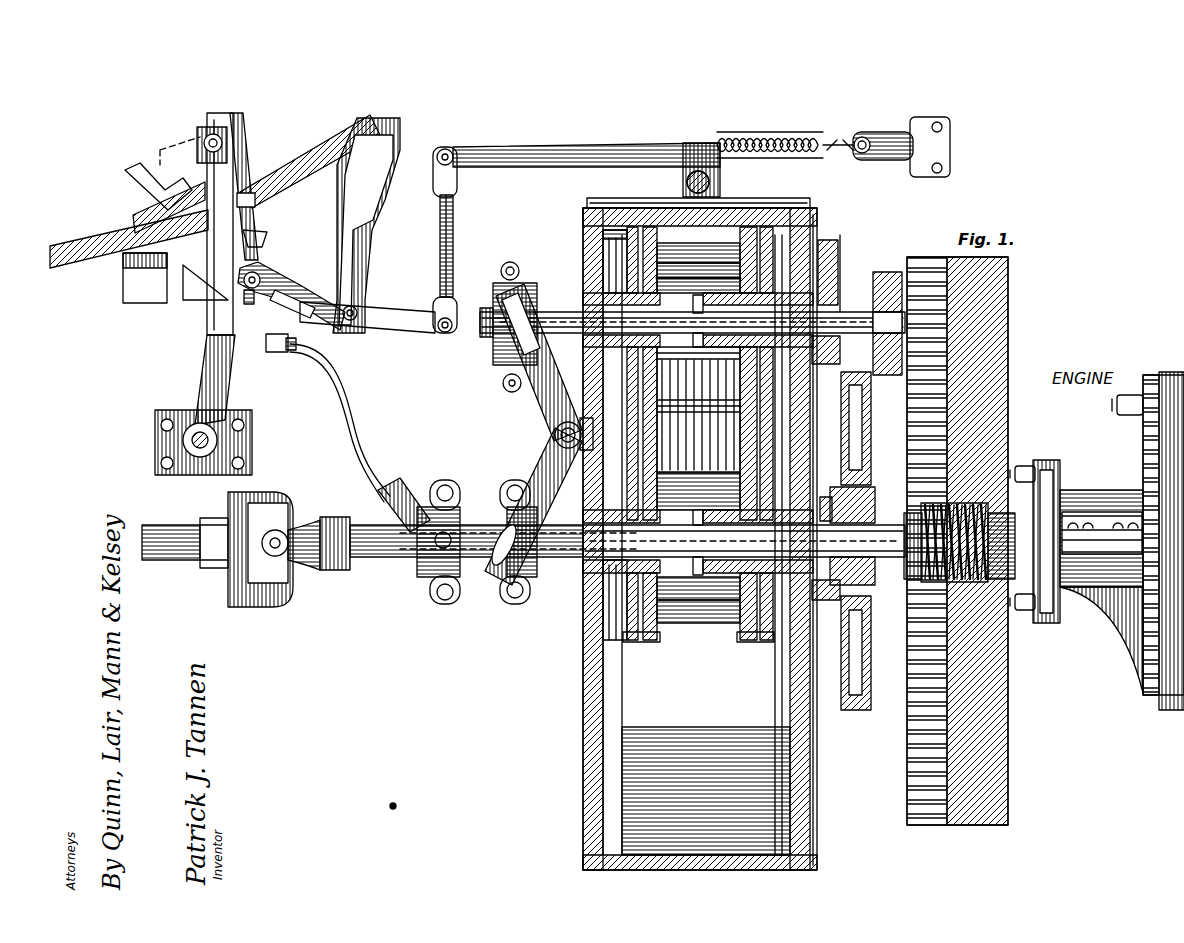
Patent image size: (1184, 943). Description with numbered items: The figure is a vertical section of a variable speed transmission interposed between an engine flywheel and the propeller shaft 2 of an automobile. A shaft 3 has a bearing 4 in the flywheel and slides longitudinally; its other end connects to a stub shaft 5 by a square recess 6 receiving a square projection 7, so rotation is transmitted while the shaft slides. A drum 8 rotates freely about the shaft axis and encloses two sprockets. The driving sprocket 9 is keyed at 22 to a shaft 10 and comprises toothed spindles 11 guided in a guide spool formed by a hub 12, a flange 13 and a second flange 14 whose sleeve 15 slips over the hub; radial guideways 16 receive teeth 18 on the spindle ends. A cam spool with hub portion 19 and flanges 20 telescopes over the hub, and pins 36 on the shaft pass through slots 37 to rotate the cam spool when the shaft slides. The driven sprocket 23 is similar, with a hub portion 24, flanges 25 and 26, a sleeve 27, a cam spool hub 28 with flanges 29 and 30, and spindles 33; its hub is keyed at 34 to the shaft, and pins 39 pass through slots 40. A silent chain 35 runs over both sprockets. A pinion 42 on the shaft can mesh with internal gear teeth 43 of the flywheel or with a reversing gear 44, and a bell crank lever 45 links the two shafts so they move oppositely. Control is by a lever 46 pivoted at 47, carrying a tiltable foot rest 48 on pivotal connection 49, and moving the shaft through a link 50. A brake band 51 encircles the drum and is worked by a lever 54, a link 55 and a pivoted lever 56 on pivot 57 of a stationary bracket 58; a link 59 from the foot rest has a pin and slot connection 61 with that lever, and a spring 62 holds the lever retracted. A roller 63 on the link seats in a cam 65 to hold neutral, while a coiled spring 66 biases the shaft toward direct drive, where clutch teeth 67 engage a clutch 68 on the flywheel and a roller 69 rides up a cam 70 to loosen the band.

The propeller shaft 2 is at (190, 560).
The shaft 3 is at (744, 541).
The bearing 4 is at (962, 542).
The stub shaft 5 is at (396, 560).
The square recess 6 is at (590, 570).
The square projection 7 is at (990, 712).
The drum 8 is at (602, 703).
The driving sprocket 9 is at (698, 260).
The shaft 10 is at (853, 312).
The toothed spindles 11 is at (682, 258).
The hub 12 is at (624, 283).
The flange 13 is at (626, 262).
The second flange 14 is at (768, 245).
The sleeve 15 is at (821, 300).
The radial slots or guideways 16 is at (782, 224).
The teeth 18 is at (636, 228).
The hub portion 19 is at (707, 321).
The flanges 20 is at (650, 228).
The key 22 is at (822, 336).
The driven sprocket 23 is at (712, 625).
The hub portion 24 is at (605, 608).
The flange 25 is at (634, 642).
The flange 26 is at (766, 642).
The sleeve 27 is at (828, 601).
The hub portion 28 is at (698, 541).
The flange 29 is at (652, 641).
The flange 30 is at (745, 643).
The toothed spindles 33 is at (712, 628).
The key 34 is at (828, 496).
The silent chain 35 is at (745, 430).
The pins 36 is at (738, 320).
The slots 37 is at (621, 320).
The pins 39 is at (692, 542).
The slots 40 is at (698, 509).
The pinion 42 is at (885, 274).
The internal gear teeth 43 is at (926, 256).
The reversing gear 44 is at (871, 395).
The bell crank lever 45 is at (520, 393).
The lever 46 is at (210, 318).
The pivot 47 is at (158, 440).
The foot rest 48 is at (222, 136).
The pivotal connection 49 is at (226, 140).
The link 50 is at (330, 400).
The brake band 51 is at (606, 200).
The lever 54 is at (505, 147).
The link 55 is at (452, 220).
The pivoted lever 56 is at (387, 306).
The pivot 57 is at (348, 322).
The stationary bracket 58 is at (357, 232).
The link 59 is at (252, 166).
The pin and slot connection 61 is at (302, 311).
The spring 62 is at (790, 160).
The pin or roller 63 is at (256, 210).
The cam 65 is at (265, 244).
The coiled spring 66 is at (1045, 470).
The clutch teeth 67 is at (880, 598).
The clutch 68 is at (870, 500).
The roller 69 is at (251, 308).
The cam 70 is at (196, 285).